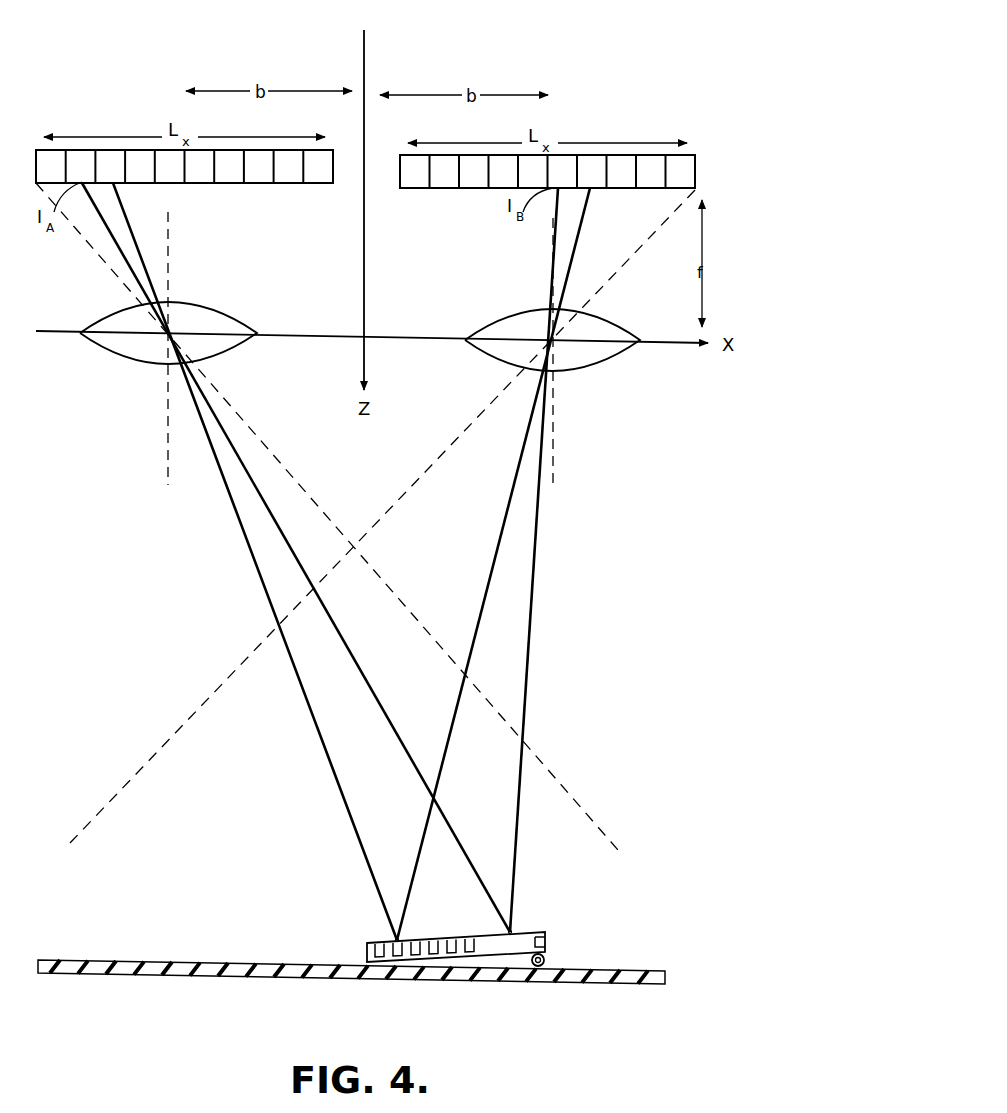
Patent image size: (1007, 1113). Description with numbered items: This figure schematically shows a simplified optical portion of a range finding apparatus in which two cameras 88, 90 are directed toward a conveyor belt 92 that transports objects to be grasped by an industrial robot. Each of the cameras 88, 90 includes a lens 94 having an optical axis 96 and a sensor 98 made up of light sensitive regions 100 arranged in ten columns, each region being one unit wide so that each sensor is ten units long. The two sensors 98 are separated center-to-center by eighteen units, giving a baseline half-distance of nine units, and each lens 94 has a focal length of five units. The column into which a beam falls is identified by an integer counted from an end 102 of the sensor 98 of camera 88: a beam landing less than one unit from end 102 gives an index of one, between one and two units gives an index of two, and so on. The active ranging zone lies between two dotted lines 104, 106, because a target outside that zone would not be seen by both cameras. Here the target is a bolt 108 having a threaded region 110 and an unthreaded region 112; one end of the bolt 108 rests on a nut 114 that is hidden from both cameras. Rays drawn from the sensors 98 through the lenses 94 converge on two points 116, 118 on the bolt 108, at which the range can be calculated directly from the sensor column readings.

The camera 88 is at (104, 60).
The camera 90 is at (679, 55).
The conveyor belt 92 is at (175, 972).
The lens 94 is at (125, 360).
The optical axis 96 is at (172, 245).
The sensor 98 is at (297, 250).
The light sensitive regions 100 is at (283, 183).
The end 102 is at (327, 170).
The dotted line 104 is at (555, 765).
The dotted line 106 is at (135, 770).
The bolt 108 is at (448, 920).
The threaded region 110 is at (430, 940).
The unthreaded region 112 is at (523, 937).
The nut 114 is at (548, 962).
The point 116 is at (395, 939).
The point 118 is at (507, 932).